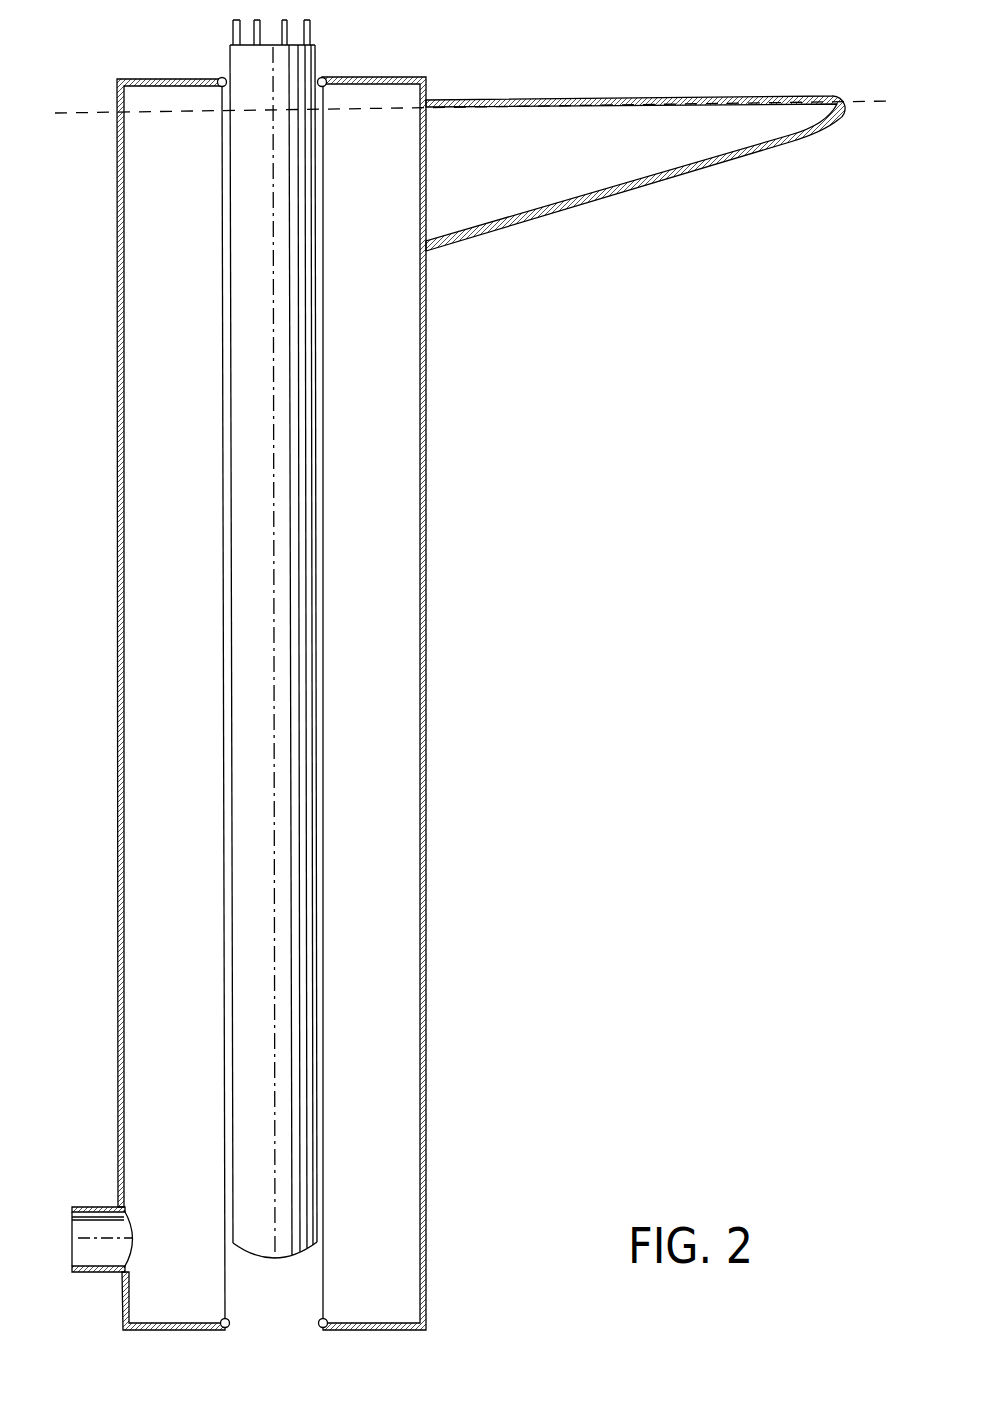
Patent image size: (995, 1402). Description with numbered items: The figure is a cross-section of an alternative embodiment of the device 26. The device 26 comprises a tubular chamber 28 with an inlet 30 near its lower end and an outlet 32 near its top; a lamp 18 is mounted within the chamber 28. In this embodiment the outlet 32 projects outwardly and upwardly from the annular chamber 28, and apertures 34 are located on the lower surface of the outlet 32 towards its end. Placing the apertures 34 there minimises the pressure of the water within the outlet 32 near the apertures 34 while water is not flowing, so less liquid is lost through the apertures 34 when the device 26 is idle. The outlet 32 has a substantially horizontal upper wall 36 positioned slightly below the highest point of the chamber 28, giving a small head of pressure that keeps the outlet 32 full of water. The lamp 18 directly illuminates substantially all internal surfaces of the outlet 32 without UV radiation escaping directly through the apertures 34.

The lamp 18 is at (305, 678).
The device 26 is at (468, 637).
The tubular chamber 28 is at (395, 1060).
The inlet 30 is at (77, 1237).
The outlet 32 is at (555, 211).
The apertures 34 is at (767, 143).
The upper wall 36 is at (668, 96).